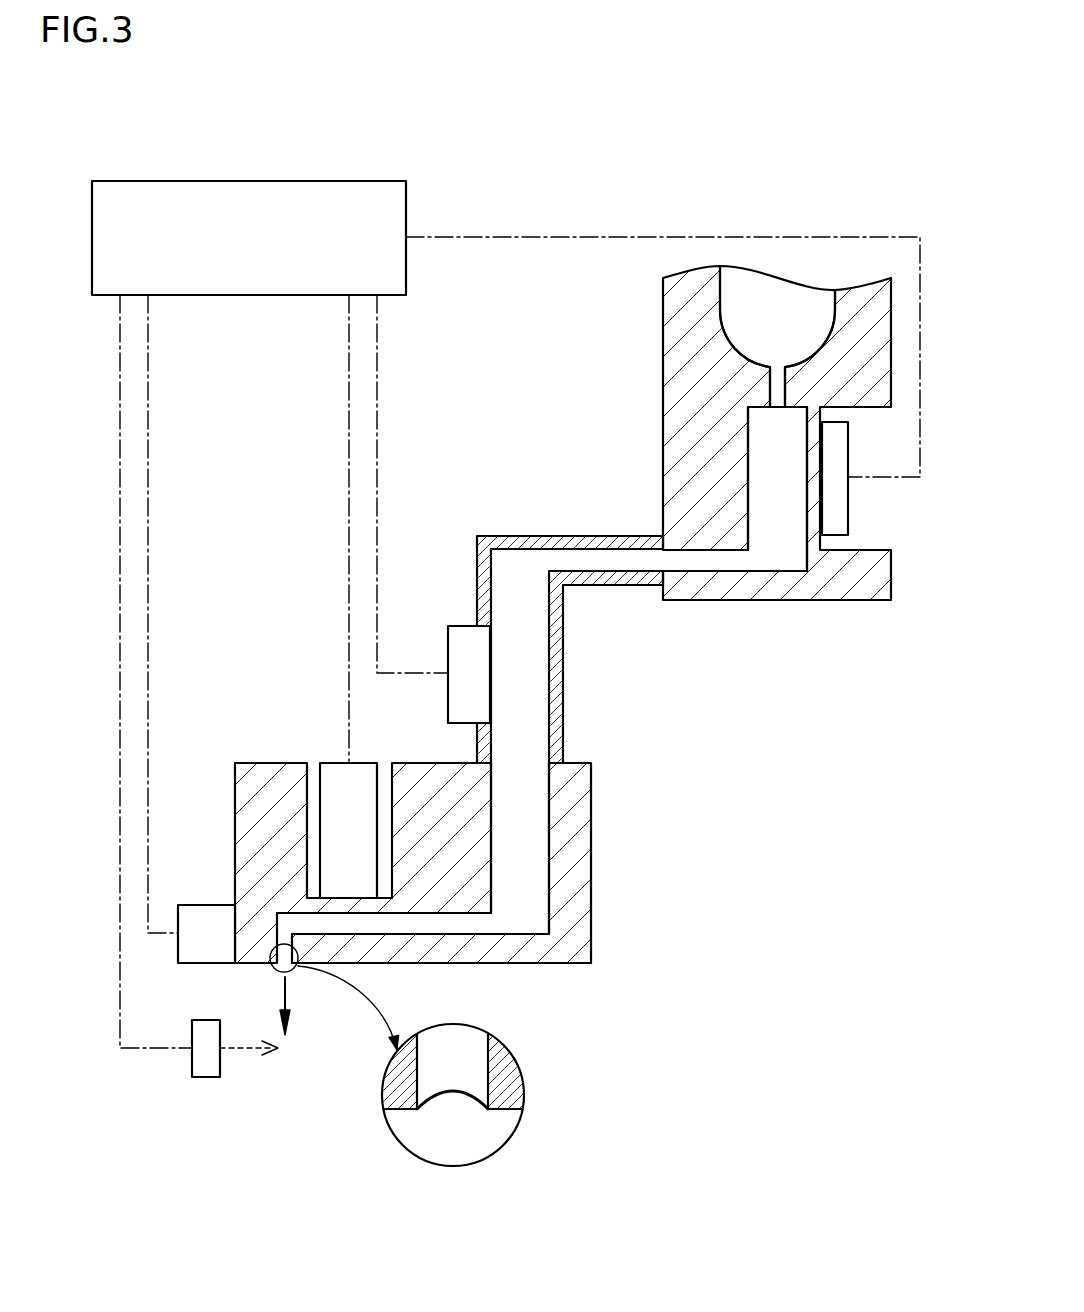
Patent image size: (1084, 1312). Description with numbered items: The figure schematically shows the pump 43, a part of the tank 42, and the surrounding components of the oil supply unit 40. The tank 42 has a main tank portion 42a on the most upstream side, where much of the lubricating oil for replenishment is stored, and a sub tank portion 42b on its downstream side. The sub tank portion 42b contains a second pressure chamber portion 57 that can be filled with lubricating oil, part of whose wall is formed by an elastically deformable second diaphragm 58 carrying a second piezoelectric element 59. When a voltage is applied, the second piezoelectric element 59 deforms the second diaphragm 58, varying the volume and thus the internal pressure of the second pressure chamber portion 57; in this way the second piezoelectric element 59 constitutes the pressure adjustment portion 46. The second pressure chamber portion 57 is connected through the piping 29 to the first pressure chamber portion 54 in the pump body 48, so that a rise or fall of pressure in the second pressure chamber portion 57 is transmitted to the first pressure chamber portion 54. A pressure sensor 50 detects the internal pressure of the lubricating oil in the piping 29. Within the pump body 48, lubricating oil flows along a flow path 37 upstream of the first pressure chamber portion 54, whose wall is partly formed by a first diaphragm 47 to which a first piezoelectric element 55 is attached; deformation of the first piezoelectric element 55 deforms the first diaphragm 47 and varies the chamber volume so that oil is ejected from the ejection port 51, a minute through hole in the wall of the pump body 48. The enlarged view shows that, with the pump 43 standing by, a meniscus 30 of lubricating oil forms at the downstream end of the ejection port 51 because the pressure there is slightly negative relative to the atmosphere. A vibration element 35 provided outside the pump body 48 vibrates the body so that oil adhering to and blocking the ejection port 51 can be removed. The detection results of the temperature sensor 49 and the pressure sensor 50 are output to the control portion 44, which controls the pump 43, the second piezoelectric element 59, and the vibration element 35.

The control portion 44 is at (120, 181).
The tank 42 is at (724, 428).
The main tank portion 42a is at (718, 313).
The sub tank portion 42b is at (748, 425).
The second pressure chamber portion 57 is at (772, 490).
The second piezoelectric element 59 is at (891, 486).
The pressure adjustment portion 46 is at (891, 486).
The second diaphragm 58 is at (813, 512).
The piping 29 is at (549, 536).
The pressure sensor 50 is at (460, 626).
The oil supply unit 40 is at (745, 737).
The pump 43 is at (471, 898).
The flow path 37 is at (523, 849).
The first diaphragm 47 is at (361, 906).
The first pressure chamber portion 54 is at (407, 922).
The pump body 48 is at (495, 957).
The first piezoelectric element 55 is at (330, 762).
The vibration element 35 is at (205, 905).
The ejection port 51 is at (384, 1080).
The meniscus 30 is at (453, 1092).
The temperature sensor 49 is at (203, 1078).